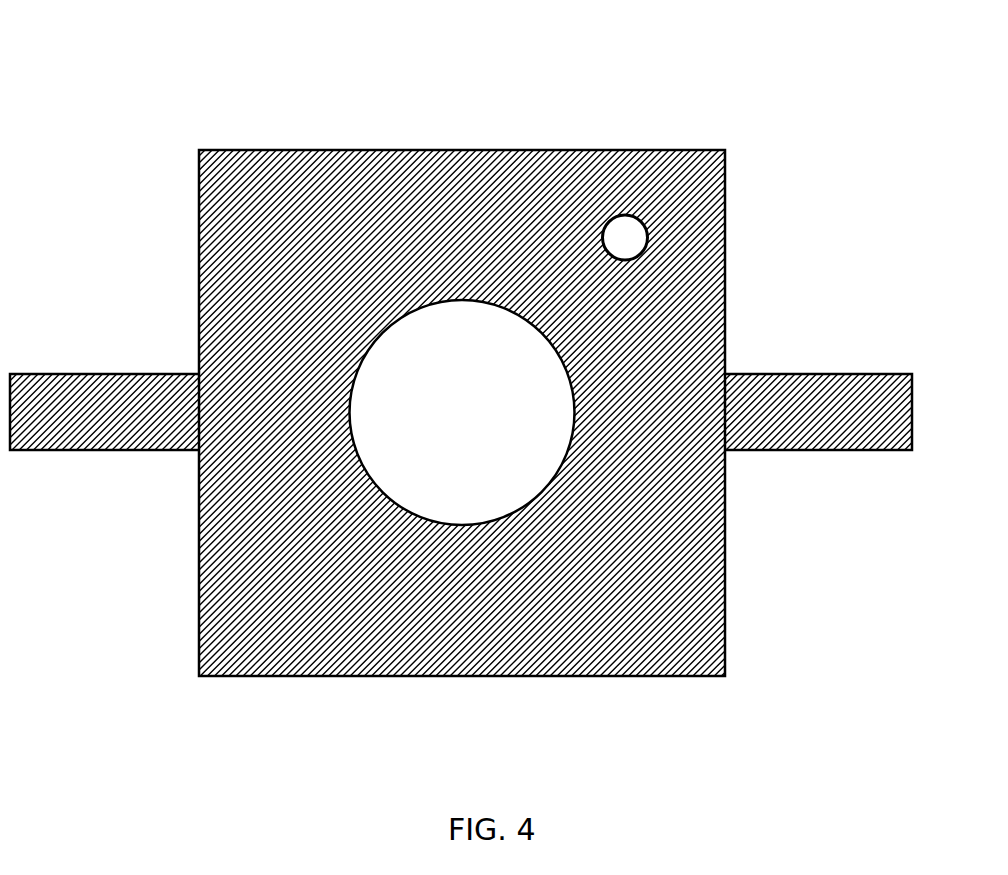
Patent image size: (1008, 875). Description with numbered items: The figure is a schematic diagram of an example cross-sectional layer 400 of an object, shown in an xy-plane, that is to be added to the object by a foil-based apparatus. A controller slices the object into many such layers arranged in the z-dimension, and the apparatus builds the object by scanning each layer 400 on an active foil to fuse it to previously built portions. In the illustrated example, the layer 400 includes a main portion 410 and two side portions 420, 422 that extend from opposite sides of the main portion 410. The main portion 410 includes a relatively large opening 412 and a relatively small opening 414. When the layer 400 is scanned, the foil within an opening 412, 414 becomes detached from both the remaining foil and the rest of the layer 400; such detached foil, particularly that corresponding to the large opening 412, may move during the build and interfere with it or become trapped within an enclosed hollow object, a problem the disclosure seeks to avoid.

The cross-sectional layer 400 is at (152, 36).
The main portion 410 is at (271, 150).
The relatively large opening 412 is at (457, 287).
The relatively small opening 414 is at (623, 200).
The side portion 420 is at (120, 374).
The side portion 422 is at (773, 375).